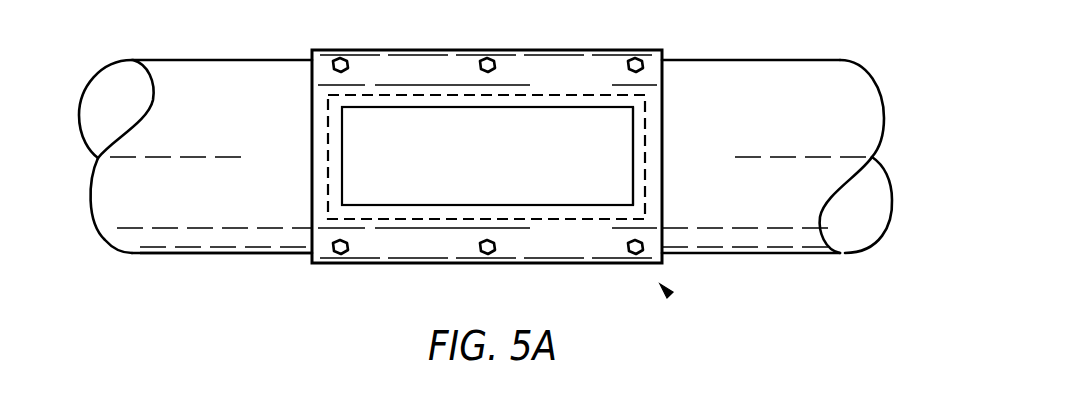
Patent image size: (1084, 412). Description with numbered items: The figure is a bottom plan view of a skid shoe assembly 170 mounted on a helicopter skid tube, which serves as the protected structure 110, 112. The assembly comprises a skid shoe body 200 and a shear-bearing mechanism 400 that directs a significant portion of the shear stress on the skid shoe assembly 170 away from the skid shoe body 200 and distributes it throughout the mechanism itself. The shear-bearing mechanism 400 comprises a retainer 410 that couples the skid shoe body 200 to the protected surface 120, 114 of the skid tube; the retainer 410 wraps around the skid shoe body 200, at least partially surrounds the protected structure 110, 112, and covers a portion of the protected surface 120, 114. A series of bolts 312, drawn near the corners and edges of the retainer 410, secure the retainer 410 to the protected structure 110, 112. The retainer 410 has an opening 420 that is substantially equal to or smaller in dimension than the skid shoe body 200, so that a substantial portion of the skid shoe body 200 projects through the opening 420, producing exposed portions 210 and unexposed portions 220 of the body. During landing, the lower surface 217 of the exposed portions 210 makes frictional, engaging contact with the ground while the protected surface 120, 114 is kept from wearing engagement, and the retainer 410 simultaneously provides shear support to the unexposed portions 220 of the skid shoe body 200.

The protected structure 110 is at (227, 275).
The helicopter skid tube 112 is at (205, 255).
The protected surface 114 is at (182, 107).
The protected surface 120 is at (198, 133).
The skid shoe assembly 170 is at (668, 292).
The skid shoe body 200 is at (328, 151).
The exposed portions 210 is at (503, 169).
The lower surface 217 is at (622, 151).
The unexposed portions 220 is at (530, 208).
The bolt 312 is at (338, 58).
The shear-bearing mechanism 400 is at (546, 156).
The retainer 410 is at (665, 98).
The opening 420 is at (532, 107).